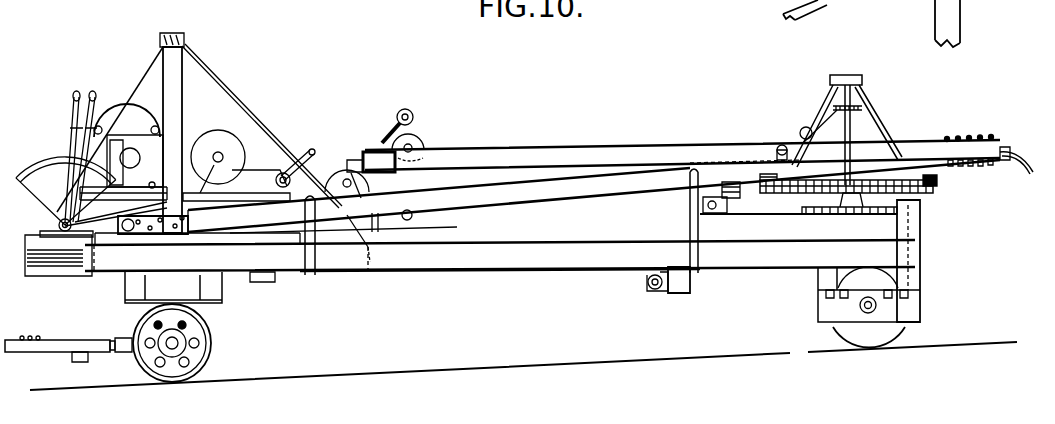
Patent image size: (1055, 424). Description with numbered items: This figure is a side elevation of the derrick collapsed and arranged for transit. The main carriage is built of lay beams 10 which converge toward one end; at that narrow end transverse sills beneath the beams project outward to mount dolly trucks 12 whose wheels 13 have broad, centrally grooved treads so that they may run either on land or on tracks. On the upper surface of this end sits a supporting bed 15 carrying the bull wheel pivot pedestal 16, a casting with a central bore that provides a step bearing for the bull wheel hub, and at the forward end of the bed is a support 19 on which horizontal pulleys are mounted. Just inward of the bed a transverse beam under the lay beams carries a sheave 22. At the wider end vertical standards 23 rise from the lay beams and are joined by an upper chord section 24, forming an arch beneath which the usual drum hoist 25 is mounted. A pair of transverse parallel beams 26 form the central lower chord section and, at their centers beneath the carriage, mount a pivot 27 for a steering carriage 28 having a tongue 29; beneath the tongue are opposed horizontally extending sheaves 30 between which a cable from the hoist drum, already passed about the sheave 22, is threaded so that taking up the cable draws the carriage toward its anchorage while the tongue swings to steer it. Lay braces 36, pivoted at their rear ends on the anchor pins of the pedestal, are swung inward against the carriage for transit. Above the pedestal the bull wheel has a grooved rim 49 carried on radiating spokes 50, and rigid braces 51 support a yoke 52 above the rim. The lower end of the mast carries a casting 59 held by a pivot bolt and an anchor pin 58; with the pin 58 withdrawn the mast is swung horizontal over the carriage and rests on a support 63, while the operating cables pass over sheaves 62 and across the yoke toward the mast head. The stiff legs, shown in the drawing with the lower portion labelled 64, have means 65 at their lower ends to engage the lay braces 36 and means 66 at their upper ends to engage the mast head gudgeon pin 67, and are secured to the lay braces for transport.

The lay beams 10 is at (50, 262).
The dolly trucks 12 is at (917, 313).
The wheels 13 is at (840, 327).
The supporting bed 15 is at (773, 222).
The bull wheel pivot pedestal 16 is at (903, 208).
The support 19 is at (890, 167).
The sheave 22 is at (652, 284).
The vertical standards 23 is at (175, 97).
The upper chord section 24 is at (180, 33).
The drum hoist 25 is at (248, 175).
The parallel beams 26 is at (222, 290).
The pivot 27 is at (197, 330).
The steering carriage 28 is at (120, 352).
The tongue 29 is at (123, 340).
The horizontally extending sheaves 30 is at (72, 360).
The lay braces 36 is at (430, 260).
The rim 49 is at (937, 180).
The spokes 50 is at (960, 28).
The braces 51 is at (815, 105).
The yoke 52 is at (851, 79).
The anchor pin 58 is at (890, 10).
The casting 59 is at (838, 142).
The sheaves 62 is at (782, 147).
The support 63 is at (463, 180).
The lower boom rail 64 is at (572, 188).
The engaging means 65 is at (133, 235).
The engaging means 66 is at (1011, 152).
The mast head gudgeon pin 67 is at (361, 167).